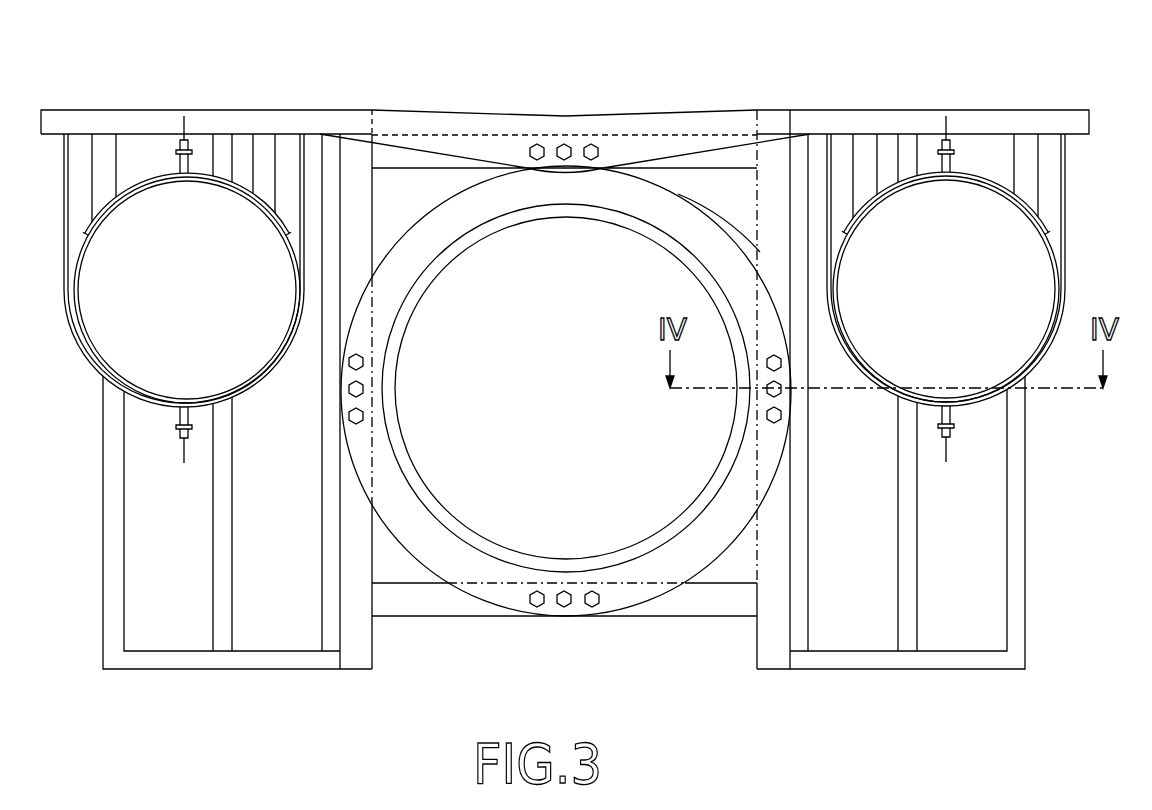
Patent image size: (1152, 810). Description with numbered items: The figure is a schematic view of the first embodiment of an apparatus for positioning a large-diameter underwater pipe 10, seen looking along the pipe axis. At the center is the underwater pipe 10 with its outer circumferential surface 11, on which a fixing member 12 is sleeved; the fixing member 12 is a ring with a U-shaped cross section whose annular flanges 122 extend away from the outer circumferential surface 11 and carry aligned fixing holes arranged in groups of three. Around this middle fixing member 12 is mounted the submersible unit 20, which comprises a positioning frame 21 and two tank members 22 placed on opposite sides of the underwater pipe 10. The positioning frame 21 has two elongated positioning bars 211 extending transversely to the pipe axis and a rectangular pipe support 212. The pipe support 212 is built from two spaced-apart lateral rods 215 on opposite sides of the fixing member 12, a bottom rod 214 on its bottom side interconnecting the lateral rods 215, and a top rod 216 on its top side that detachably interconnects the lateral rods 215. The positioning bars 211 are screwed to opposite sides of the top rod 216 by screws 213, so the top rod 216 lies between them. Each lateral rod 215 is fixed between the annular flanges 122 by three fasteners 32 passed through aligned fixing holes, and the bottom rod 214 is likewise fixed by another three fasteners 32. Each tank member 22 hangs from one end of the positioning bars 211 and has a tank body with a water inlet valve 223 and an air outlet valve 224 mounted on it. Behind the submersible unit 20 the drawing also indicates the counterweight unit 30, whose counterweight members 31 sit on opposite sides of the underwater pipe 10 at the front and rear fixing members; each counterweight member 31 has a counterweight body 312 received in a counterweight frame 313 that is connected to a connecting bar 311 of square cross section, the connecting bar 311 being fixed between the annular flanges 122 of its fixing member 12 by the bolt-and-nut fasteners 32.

The underwater pipe 10 is at (628, 555).
The outer circumferential surface 11 is at (467, 547).
The fixing member 12 is at (413, 528).
The annular flange 122 is at (710, 255).
The fastener 32 is at (768, 393).
The submersible unit 20 is at (78, 100).
The positioning frame 21 is at (232, 334).
The positioning bar 211 is at (275, 112).
The pipe support 212 is at (565, 99).
The top rod 216 is at (402, 158).
The screw 213 is at (563, 144).
The bottom rod 214 is at (712, 603).
The lateral rod 215 is at (728, 348).
The connecting bar 311 is at (770, 213).
The counterweight unit 30 is at (923, 387).
The counterweight member 31 is at (1025, 513).
The counterweight body 312 is at (853, 623).
The counterweight frame 313 is at (798, 623).
The tank member 22 is at (1032, 265).
The water inlet valve 223 is at (953, 417).
The air outlet valve 224 is at (947, 170).